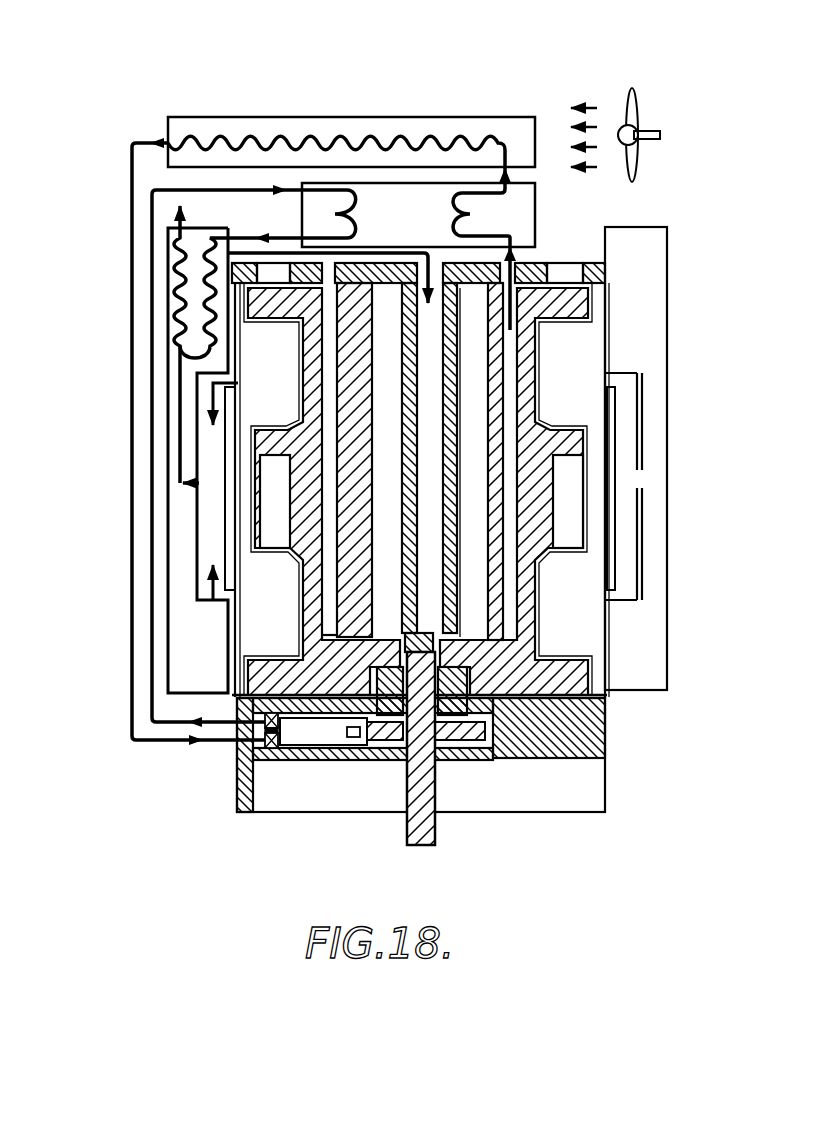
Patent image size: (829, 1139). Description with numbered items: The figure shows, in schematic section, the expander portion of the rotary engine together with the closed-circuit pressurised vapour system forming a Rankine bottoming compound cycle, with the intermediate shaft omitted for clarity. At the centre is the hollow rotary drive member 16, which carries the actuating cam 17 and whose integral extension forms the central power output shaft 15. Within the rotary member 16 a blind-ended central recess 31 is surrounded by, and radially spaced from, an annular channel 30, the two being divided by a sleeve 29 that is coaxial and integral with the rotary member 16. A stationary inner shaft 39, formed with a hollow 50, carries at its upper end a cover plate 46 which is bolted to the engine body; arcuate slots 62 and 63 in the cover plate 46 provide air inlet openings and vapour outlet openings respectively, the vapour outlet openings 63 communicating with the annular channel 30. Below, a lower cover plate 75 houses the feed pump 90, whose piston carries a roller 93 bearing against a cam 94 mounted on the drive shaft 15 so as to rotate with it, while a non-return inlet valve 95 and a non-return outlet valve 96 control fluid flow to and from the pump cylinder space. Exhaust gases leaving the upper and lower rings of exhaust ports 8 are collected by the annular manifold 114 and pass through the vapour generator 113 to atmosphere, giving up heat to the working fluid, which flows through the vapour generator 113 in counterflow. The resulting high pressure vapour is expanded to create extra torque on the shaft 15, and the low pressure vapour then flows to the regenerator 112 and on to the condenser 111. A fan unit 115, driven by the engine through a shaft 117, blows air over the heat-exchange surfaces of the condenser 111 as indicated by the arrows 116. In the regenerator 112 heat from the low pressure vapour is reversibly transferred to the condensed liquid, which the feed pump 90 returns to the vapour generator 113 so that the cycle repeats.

The exhaust ports 8 is at (238, 382).
The power output shaft 15 is at (430, 828).
The rotary drive member 16 is at (556, 489).
The actuating cam 17 is at (270, 466).
The sleeve 29 is at (497, 577).
The annular channel 30 is at (335, 373).
The blind-ended recess 31 is at (385, 592).
The inner shaft 39 is at (455, 468).
The cover plate 46 is at (591, 262).
The hollow 50 is at (432, 352).
The arcuate slots (air inlet openings) 62 is at (566, 300).
The vapour outlet openings 63 is at (517, 258).
The lower cover plate 75 is at (606, 749).
The feed pump 90 is at (330, 742).
The roller 93 is at (370, 742).
The cam 94 is at (478, 742).
The non-return inlet valve 95 is at (253, 748).
The non-return outlet valve 96 is at (272, 750).
The condenser 111 is at (237, 123).
The regenerator 112 is at (312, 200).
The vapour generator 113 is at (152, 272).
The annular manifold 114 is at (213, 433).
The fan unit 115 is at (624, 102).
The arrows (air flow) 116 is at (590, 102).
The shaft 117 is at (655, 131).